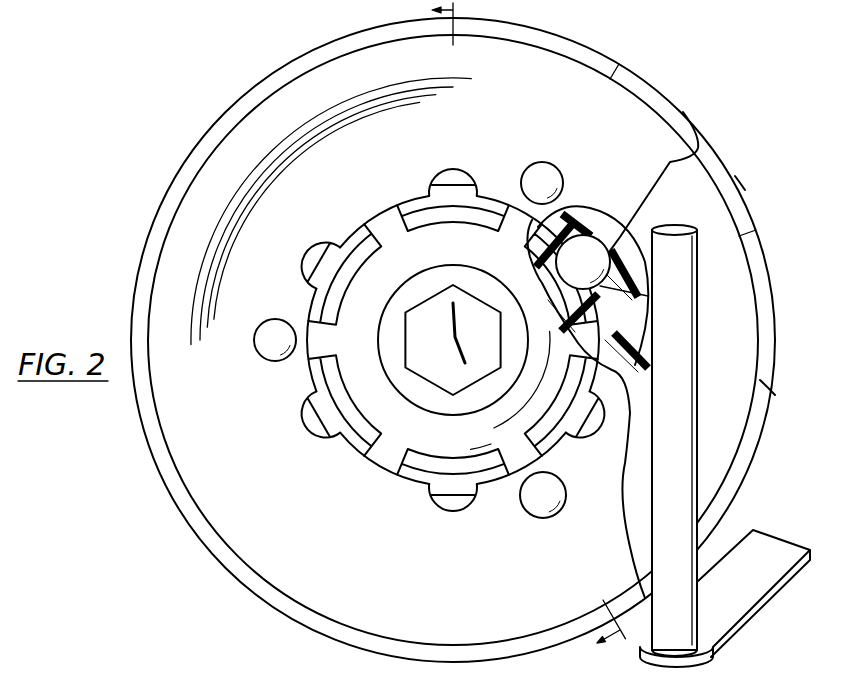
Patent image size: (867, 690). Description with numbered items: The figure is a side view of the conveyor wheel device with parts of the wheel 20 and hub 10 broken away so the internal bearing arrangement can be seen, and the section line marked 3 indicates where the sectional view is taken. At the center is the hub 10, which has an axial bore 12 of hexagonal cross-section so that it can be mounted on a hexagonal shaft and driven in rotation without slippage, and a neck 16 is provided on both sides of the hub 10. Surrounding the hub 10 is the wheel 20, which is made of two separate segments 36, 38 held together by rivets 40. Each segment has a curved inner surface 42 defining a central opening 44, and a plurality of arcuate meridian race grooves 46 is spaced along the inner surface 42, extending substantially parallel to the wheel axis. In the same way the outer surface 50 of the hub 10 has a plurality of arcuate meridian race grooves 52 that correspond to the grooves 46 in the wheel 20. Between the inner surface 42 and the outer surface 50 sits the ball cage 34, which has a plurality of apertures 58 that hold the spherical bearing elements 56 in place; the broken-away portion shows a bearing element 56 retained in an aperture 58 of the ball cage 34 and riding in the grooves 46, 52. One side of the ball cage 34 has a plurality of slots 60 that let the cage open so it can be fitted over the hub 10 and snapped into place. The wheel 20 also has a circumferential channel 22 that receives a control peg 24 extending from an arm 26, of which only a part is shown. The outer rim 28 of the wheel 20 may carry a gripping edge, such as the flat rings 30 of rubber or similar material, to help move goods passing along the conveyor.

The section line 3- 3 is at (514, 334).
The hub 10 is at (360, 308).
The axial bore 12 is at (404, 352).
The neck 16 is at (400, 393).
The wheel 20 is at (213, 108).
The circumferential channel 22 is at (737, 405).
The control peg 24 is at (698, 476).
The arm 26 is at (776, 548).
The outer rim 28 is at (620, 62).
The flat rings 30 is at (734, 176).
The ball cage 34 is at (605, 312).
The segment 36 is at (684, 112).
The segment 38 is at (757, 232).
The rivets 40 is at (540, 162).
The inner surface 42 is at (618, 368).
The central opening 44 is at (362, 232).
The race grooves 46 is at (453, 172).
The outer surface 50 is at (612, 290).
The race grooves 52 is at (566, 284).
The spherical bearing elements 56 is at (623, 230).
The apertures 58 is at (566, 216).
The slots 60 is at (378, 230).